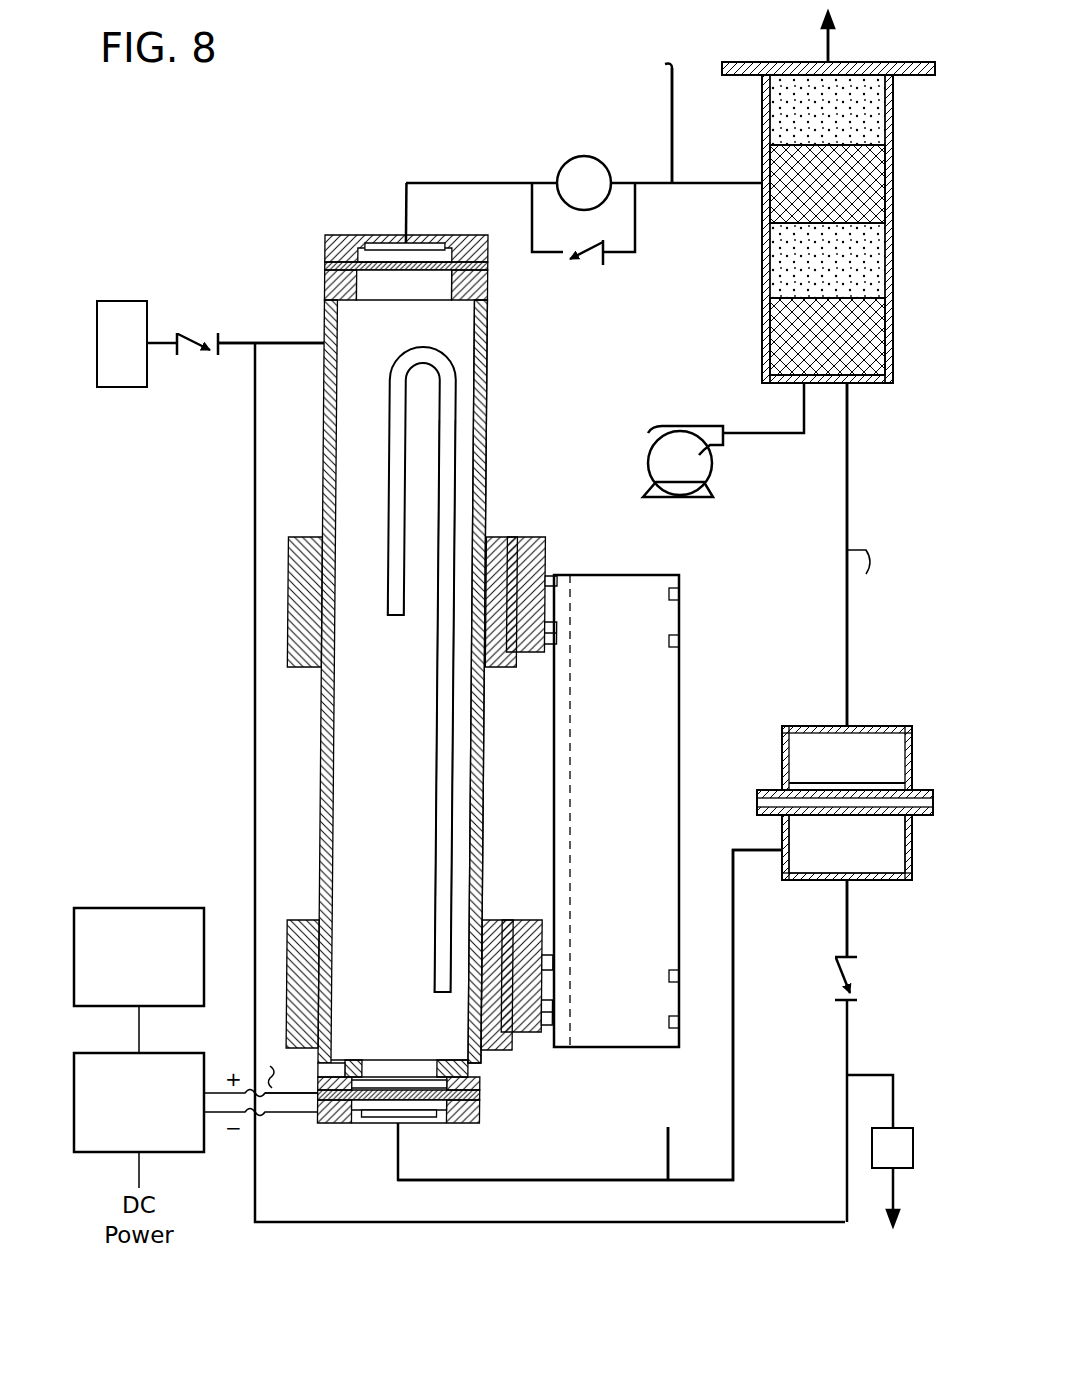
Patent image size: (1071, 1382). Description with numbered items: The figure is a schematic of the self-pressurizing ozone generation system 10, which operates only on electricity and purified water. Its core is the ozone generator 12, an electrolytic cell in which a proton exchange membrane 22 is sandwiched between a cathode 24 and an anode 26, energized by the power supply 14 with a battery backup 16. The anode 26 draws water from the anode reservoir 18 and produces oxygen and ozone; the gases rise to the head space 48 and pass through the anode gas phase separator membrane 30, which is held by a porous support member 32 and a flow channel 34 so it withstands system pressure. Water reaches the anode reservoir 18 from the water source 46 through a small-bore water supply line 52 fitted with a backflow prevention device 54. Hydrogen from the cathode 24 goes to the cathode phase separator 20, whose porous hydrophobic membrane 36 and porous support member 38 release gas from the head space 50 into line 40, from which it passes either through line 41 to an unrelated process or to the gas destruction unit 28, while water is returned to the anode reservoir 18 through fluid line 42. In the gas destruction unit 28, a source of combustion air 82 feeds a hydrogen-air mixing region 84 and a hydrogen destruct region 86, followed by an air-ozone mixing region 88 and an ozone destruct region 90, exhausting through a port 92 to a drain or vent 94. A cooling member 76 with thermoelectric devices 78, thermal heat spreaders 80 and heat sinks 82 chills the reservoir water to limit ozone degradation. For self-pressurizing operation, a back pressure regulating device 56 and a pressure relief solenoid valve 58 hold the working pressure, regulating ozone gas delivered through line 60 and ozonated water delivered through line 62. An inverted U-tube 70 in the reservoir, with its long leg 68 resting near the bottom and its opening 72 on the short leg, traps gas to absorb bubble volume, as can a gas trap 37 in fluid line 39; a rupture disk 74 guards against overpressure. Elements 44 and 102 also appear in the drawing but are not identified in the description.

The ozone generation system 10 is at (293, 170).
The ozone generator 12 is at (497, 1143).
The power supply 14 is at (160, 1152).
The battery backup 16 is at (150, 907).
The anode reservoir 18 is at (487, 376).
The cathode phase separator 20 is at (792, 727).
The proton exchange membrane 22 is at (482, 1096).
The cathode 24 is at (333, 1122).
The anode 26 is at (470, 1083).
The gas destruction unit 28 is at (763, 262).
The anode gas phase separator membrane 30 is at (325, 266).
The porous support member 32 is at (330, 237).
The flow channel 34 is at (408, 240).
The porous hydrophobic membrane 36 is at (830, 810).
The gas trap 37 is at (668, 1142).
The porous support member 38 is at (800, 782).
The fluid line 39 is at (733, 1073).
The hydrogen discharge line 40 is at (847, 480).
The hydrogen delivery line 41 is at (872, 583).
The fluid return line 42 is at (847, 932).
The outlet valve 44 is at (832, 957).
The water source 46 is at (108, 357).
The head space 48 is at (375, 278).
The head space 50 is at (822, 870).
The water supply line 52 is at (324, 343).
The backflow prevention device 54 is at (188, 355).
The back pressure regulating device 56 is at (605, 262).
The pressure relief solenoid valve 58 is at (570, 160).
The ozone gas delivery line 60 is at (672, 100).
The ozonated water delivery line 62 is at (283, 1073).
The long leg of U-tube 68 is at (412, 352).
The inverted U-tube 70 is at (456, 447).
The opening of short leg 72 is at (396, 617).
The rupture disk 74 is at (912, 1128).
The cooling member 76 is at (704, 614).
The thermoelectric devices 78 is at (552, 578).
The thermal heat spreaders 80 is at (518, 538).
The heat sinks 82 is at (660, 430).
The hydrogen-air mixing region 84 is at (775, 335).
The hydrogen destruct region 86 is at (775, 235).
The air-ozone mixing region 88 is at (766, 165).
The ozone destruct region 90 is at (775, 127).
The port 92 is at (832, 62).
The drain or vent 94 is at (826, 50).
The electrode plate 102 is at (385, 1114).